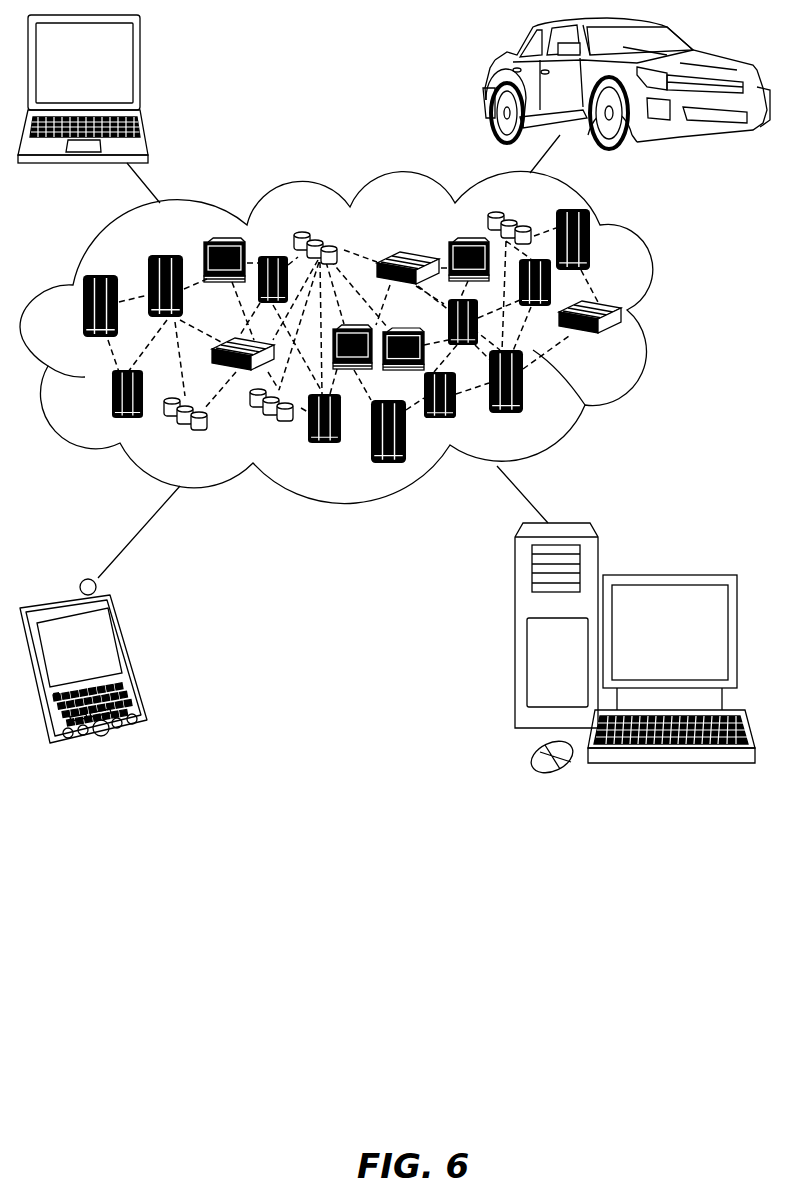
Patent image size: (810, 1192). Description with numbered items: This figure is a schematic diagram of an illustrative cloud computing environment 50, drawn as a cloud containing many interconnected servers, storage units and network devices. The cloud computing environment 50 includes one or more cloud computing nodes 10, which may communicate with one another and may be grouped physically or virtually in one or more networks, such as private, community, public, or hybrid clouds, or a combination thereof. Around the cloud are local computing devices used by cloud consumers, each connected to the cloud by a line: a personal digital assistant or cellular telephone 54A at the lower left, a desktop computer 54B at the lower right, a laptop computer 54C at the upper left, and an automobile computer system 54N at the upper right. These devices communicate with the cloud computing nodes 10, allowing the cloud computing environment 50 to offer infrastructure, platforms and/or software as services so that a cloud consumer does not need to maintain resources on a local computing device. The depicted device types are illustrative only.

The laptop computer 54C is at (141, 70).
The automobile computer system 54N is at (492, 85).
The personal digital assistant (PDA) or cellular telephone 54A is at (130, 657).
The desktop computer 54B is at (667, 575).
The cloud computing environment 50 is at (367, 337).
The cloud computing node 10 is at (619, 345).